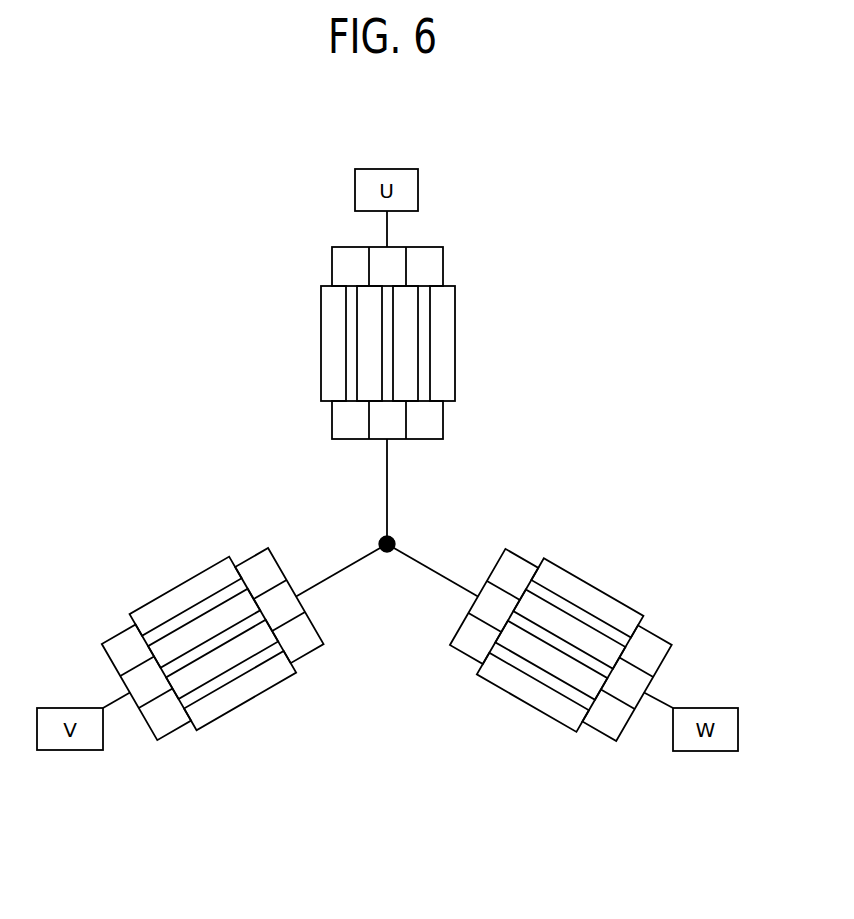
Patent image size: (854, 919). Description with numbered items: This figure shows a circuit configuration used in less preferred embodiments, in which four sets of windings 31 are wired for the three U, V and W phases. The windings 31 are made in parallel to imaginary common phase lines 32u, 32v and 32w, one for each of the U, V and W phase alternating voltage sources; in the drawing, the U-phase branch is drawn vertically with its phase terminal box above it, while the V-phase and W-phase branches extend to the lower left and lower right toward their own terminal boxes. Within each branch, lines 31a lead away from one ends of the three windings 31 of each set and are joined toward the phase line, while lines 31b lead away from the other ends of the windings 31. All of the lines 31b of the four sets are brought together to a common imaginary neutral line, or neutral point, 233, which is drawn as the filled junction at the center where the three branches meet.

The windings 31 is at (322, 365).
The lines 31a is at (443, 266).
The lines 31b is at (443, 423).
The imaginary common phase line 32u is at (387, 227).
The imaginary common phase line 32v is at (113, 702).
The imaginary common phase line 32w is at (658, 702).
The common imaginary neutral line 233 is at (393, 540).